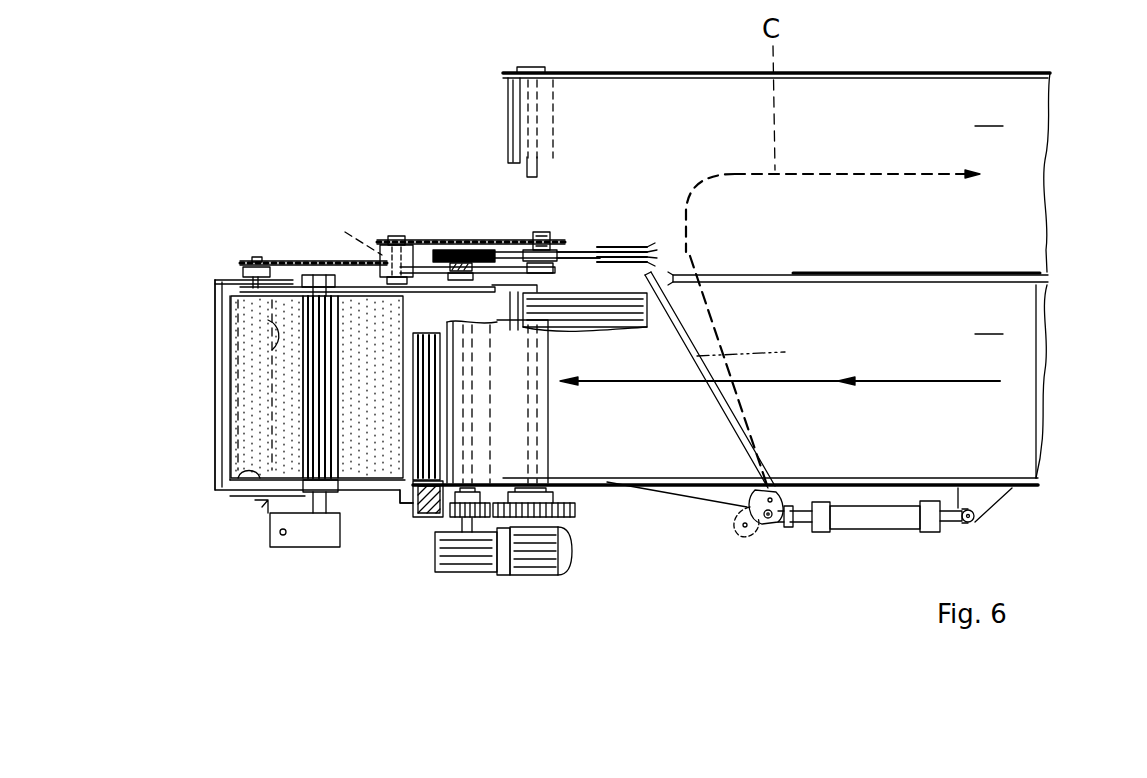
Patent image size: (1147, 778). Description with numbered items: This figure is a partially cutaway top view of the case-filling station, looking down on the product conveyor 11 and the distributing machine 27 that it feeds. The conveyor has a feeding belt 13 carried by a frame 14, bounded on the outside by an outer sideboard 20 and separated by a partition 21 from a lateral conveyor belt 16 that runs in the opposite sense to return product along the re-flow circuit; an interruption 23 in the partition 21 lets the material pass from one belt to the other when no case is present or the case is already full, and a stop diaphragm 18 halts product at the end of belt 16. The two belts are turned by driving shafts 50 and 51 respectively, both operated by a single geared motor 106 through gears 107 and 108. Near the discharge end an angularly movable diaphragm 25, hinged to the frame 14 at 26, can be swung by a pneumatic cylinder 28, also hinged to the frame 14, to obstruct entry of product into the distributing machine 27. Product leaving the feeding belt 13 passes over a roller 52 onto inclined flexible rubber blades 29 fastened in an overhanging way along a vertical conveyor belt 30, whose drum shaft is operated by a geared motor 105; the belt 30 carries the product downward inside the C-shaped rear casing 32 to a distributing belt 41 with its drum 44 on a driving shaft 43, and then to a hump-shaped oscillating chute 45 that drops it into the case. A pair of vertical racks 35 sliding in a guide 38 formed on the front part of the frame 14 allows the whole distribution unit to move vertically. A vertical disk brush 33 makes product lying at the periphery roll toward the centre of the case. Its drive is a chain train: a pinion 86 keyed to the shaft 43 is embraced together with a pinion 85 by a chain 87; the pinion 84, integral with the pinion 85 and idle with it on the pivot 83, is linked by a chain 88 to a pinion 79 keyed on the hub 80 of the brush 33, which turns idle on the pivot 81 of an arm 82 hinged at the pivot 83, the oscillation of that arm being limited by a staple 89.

The conveyor of the product 11 is at (1060, 392).
The feeding belt 13 is at (803, 381).
The frame 14 is at (1022, 488).
The lateral conveyor belt 16 is at (776, 169).
The product stop diaphragm 18 is at (514, 92).
The outer sideboard of belt 13 20 is at (1010, 478).
The separating partition 21 is at (1028, 270).
The interruption of the partition 23 is at (758, 272).
The angularly movable diaphragm 25 is at (657, 538).
The hinge of the diaphragm 26 is at (760, 524).
The distributing machine 27 is at (205, 500).
The pneumatic operation cylinder 28 is at (866, 528).
The inclined flexible rubber blades 29 is at (252, 406).
The vertical conveyor belt 30 is at (300, 366).
The rear casing 32 is at (213, 468).
The vertical disk brush 33 is at (636, 245).
The pair of vertical racks 35 is at (420, 518).
The guide 38 is at (420, 520).
The distributing belt 41 is at (497, 313).
The driving shaft 43 is at (246, 478).
The drum 44 is at (228, 320).
The chute 45 is at (638, 327).
The driving shaft of belt 13 50 is at (470, 451).
The driving shaft of belt 16 51 is at (530, 176).
The roller 52 is at (470, 356).
The pinion 79 is at (560, 250).
The hub of the brush 80 is at (522, 262).
The pivot 81 is at (553, 232).
The arm 82 is at (483, 264).
The pivot 83 is at (351, 232).
The pinion 84 is at (385, 244).
The pinion 85 is at (414, 258).
The pinion 86 is at (252, 260).
The chain 87 is at (296, 261).
The chain 88 is at (440, 250).
The staple 89 is at (462, 263).
The geared motor 105 is at (298, 547).
The geared motor 106 is at (480, 572).
The gear 107 is at (423, 515).
The gear 108 is at (575, 512).